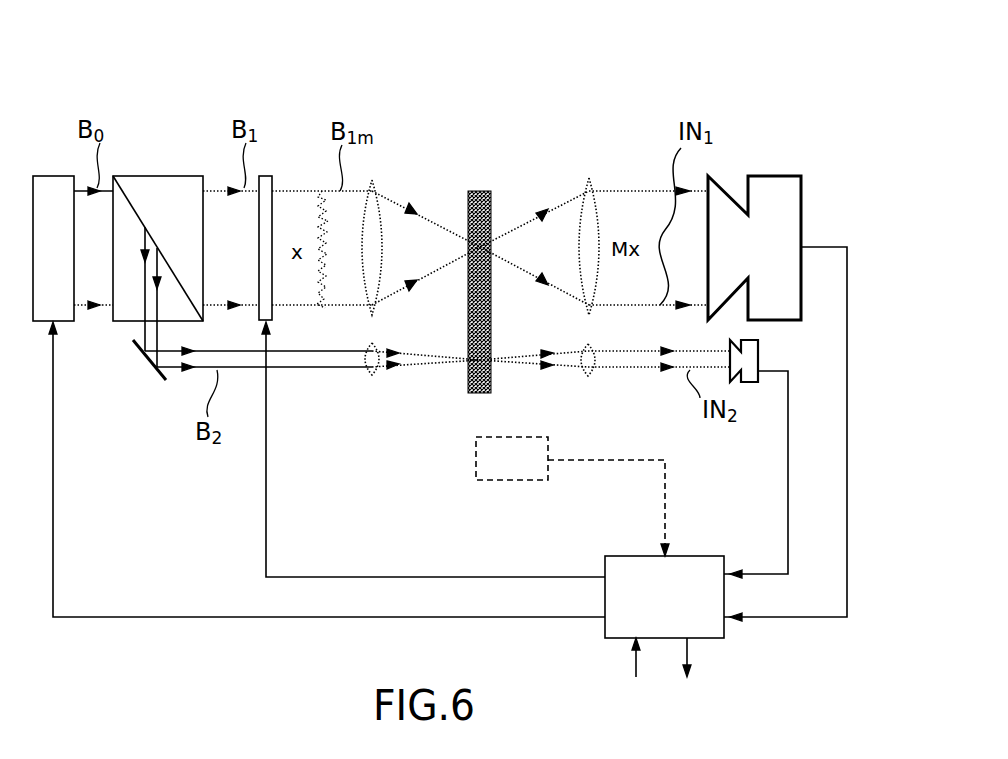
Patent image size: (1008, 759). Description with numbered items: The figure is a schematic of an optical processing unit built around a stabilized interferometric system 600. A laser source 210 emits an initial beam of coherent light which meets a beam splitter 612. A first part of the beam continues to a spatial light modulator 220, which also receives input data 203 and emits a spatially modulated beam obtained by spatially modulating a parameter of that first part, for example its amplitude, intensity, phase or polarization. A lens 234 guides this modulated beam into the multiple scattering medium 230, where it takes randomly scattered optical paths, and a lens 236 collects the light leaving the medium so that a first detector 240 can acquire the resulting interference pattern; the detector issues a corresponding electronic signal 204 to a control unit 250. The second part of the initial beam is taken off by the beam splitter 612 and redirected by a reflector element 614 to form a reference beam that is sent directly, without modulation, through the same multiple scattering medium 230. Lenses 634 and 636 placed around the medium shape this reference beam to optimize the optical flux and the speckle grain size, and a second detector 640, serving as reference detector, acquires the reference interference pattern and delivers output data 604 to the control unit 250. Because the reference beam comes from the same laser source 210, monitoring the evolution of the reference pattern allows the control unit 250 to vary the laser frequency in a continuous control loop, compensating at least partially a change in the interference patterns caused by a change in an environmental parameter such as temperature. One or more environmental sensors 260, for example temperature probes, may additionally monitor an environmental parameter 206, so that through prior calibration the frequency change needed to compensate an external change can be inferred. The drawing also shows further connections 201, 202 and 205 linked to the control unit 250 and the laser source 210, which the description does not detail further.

The laser source 210 is at (52, 176).
The beam splitter 612 is at (153, 176).
The spatial light modulator 220 is at (269, 176).
The lens 234 is at (370, 180).
The multiple scattering medium 230 is at (478, 191).
The lens 236 is at (589, 178).
The first detector 240 is at (770, 190).
The reflector element 614 is at (147, 364).
The lens 634 is at (368, 378).
The lens 636 is at (588, 378).
The second detector 640 is at (760, 355).
The electronic signal 204 is at (847, 413).
The output data 604 is at (788, 490).
The environmental sensor 260 is at (476, 452).
The environmental parameter 206 is at (667, 518).
The control unit 250 is at (724, 638).
The controller input 201 is at (637, 674).
The controller output 202 is at (690, 674).
The input data 203 is at (308, 575).
The source control line 205 is at (302, 620).
The stabilized interferometric system 600 is at (130, 662).